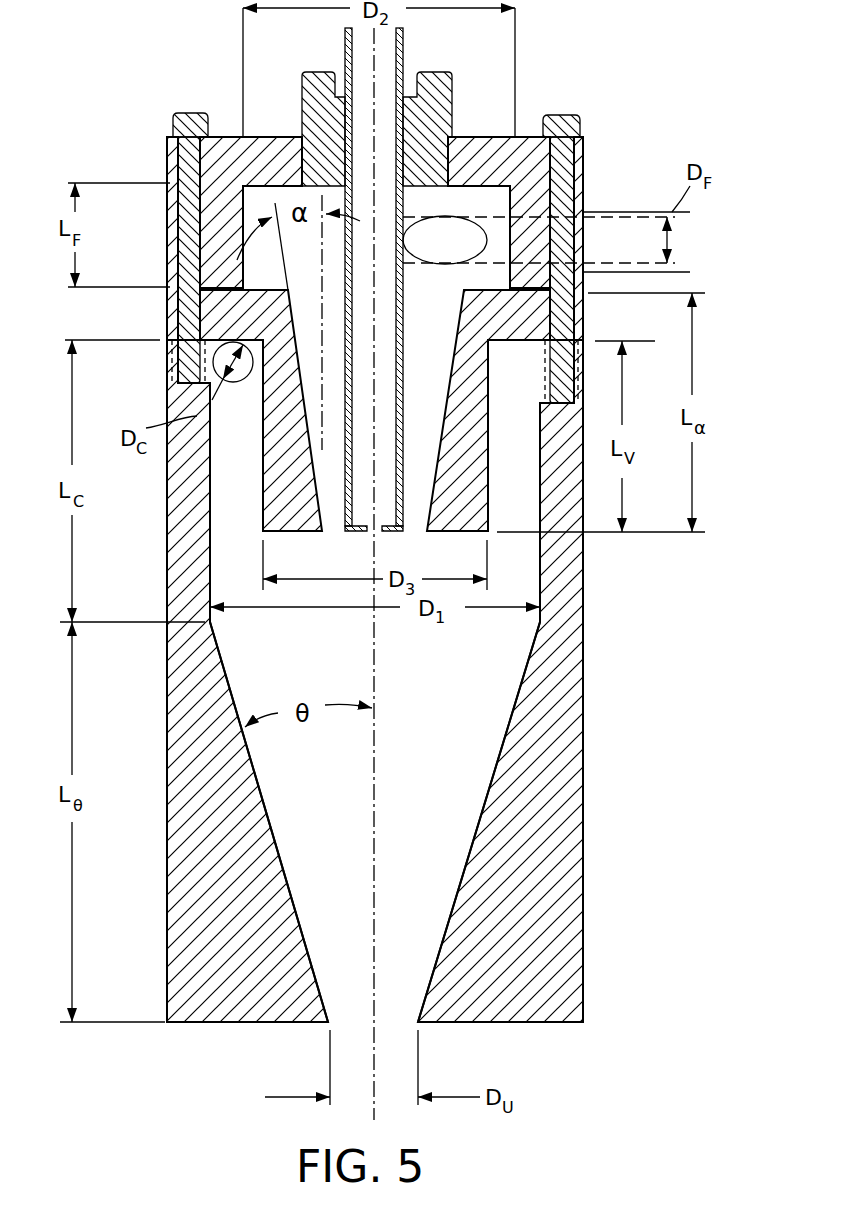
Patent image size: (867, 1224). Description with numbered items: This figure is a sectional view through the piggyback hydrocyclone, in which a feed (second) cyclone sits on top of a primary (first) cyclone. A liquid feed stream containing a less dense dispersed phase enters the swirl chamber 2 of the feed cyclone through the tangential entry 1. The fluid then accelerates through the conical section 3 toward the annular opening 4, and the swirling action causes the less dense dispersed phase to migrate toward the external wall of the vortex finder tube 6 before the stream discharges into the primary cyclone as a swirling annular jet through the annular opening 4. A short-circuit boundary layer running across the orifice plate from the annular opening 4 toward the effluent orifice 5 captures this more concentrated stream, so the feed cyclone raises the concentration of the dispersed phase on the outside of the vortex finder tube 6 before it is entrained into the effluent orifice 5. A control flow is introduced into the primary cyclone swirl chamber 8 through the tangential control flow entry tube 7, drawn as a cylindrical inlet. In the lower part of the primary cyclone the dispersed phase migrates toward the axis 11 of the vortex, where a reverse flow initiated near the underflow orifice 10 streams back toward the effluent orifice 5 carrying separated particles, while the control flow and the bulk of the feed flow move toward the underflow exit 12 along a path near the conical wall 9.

The tangential entry 1 is at (467, 235).
The swirl chamber 2 is at (240, 203).
The conical section 3 is at (432, 405).
The annular opening 4 is at (420, 532).
The effluent orifice 5 is at (385, 532).
The vortex finder tube 6 is at (383, 43).
The control flow entry tube 7 is at (215, 358).
The swirl chamber 8 is at (232, 487).
The conical wall 9 is at (295, 833).
The underflow orifice 10 is at (377, 1025).
The axis 11 is at (374, 733).
The underflow exit 12 is at (382, 1098).